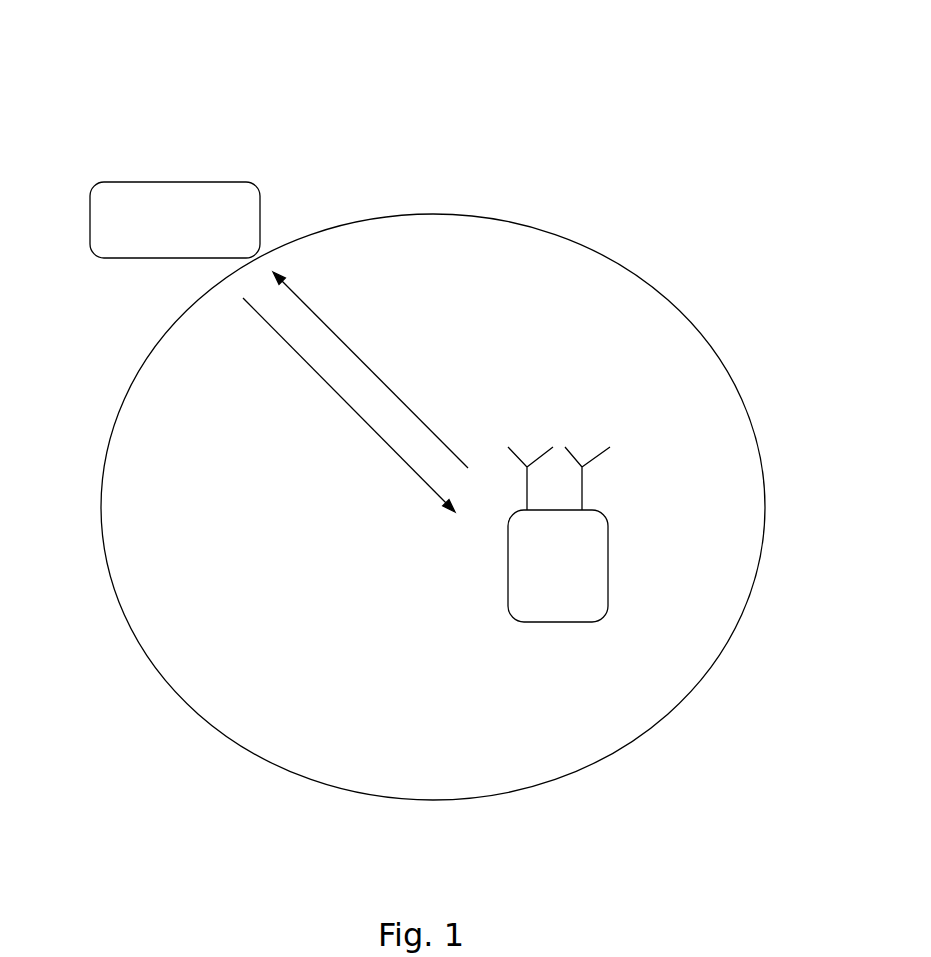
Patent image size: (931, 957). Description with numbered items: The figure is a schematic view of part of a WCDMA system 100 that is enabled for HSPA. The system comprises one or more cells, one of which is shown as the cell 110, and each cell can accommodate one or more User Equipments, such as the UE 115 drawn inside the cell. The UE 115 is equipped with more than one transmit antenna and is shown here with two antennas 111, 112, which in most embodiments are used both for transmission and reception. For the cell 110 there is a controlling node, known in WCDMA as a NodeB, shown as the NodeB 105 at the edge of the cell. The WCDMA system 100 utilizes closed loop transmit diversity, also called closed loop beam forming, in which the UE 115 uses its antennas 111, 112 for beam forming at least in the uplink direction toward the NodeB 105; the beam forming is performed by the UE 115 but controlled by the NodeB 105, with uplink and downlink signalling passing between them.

The WCDMA system 100 is at (686, 101).
The NodeB 105 is at (137, 158).
The cell 110 is at (265, 791).
The antenna 111 is at (540, 428).
The antenna 112 is at (614, 490).
The User Equipment 115 is at (532, 641).